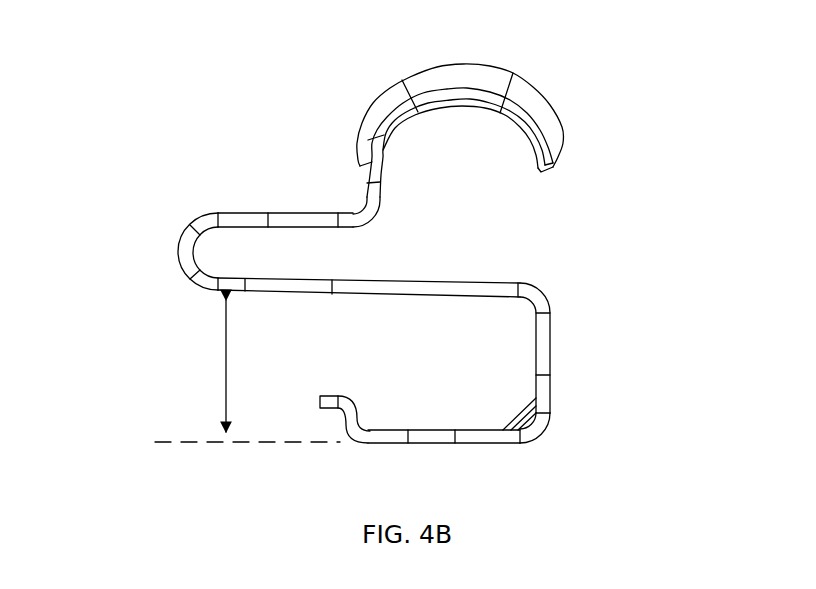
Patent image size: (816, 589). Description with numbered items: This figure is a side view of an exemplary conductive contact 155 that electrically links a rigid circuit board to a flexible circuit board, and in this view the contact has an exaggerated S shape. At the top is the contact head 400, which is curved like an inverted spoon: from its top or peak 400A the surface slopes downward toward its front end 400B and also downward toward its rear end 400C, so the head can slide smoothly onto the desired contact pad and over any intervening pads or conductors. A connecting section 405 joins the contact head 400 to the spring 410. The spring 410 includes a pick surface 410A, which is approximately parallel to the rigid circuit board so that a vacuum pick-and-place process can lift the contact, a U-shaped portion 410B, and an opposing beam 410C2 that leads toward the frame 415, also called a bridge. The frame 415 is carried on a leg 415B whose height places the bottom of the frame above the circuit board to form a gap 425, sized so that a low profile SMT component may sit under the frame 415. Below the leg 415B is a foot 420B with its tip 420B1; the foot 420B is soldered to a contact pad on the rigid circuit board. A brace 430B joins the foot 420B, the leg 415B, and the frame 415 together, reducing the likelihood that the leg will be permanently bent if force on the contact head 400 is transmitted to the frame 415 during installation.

The clip assembly 155 is at (280, 117).
The contact head 400 is at (372, 63).
The top or peak 400A is at (463, 64).
The front end 400B is at (554, 169).
The rear end 400C is at (352, 153).
The connecting section 405 is at (357, 203).
The spring 410 is at (176, 179).
The pick surface 410A is at (280, 213).
The U-shaped portion 410B is at (179, 252).
The beam 410C2 is at (438, 281).
The frame 415 is at (552, 358).
The leg 415B is at (552, 406).
The foot 420B is at (470, 447).
The tip 420B1 is at (338, 394).
The gap 425 is at (222, 360).
The brace 430B is at (513, 407).